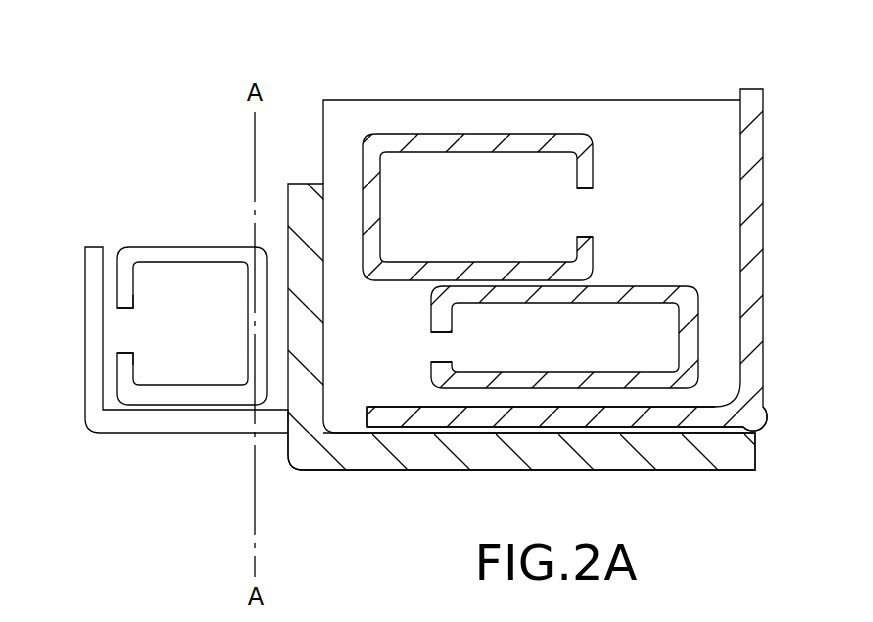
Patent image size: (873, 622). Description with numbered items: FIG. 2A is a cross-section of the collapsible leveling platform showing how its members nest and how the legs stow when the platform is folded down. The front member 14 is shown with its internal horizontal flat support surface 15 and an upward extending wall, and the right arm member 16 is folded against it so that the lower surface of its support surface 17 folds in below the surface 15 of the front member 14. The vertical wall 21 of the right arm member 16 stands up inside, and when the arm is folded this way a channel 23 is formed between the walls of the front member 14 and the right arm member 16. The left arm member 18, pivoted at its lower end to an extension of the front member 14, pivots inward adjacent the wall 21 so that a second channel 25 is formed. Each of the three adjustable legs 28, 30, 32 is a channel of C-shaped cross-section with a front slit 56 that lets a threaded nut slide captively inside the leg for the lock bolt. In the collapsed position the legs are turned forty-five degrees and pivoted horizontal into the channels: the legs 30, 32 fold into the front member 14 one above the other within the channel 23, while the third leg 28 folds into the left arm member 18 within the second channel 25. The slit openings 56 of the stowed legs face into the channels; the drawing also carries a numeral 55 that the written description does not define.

The front member 14 is at (753, 332).
The internal horizontal flat support surface 15 is at (697, 405).
The right arm member 16 is at (653, 457).
The internal horizontal flat support surface 17 is at (752, 405).
The left arm member 18 is at (93, 302).
The right angle wall surface 21 is at (315, 350).
The channel 23 is at (642, 127).
The second channel 25 is at (197, 218).
The adjustable leg 28 is at (143, 253).
The adjustable leg 30 is at (417, 138).
The adjustable leg 32 is at (688, 293).
The hook lip 55 is at (133, 365).
The front slit 56 is at (123, 328).